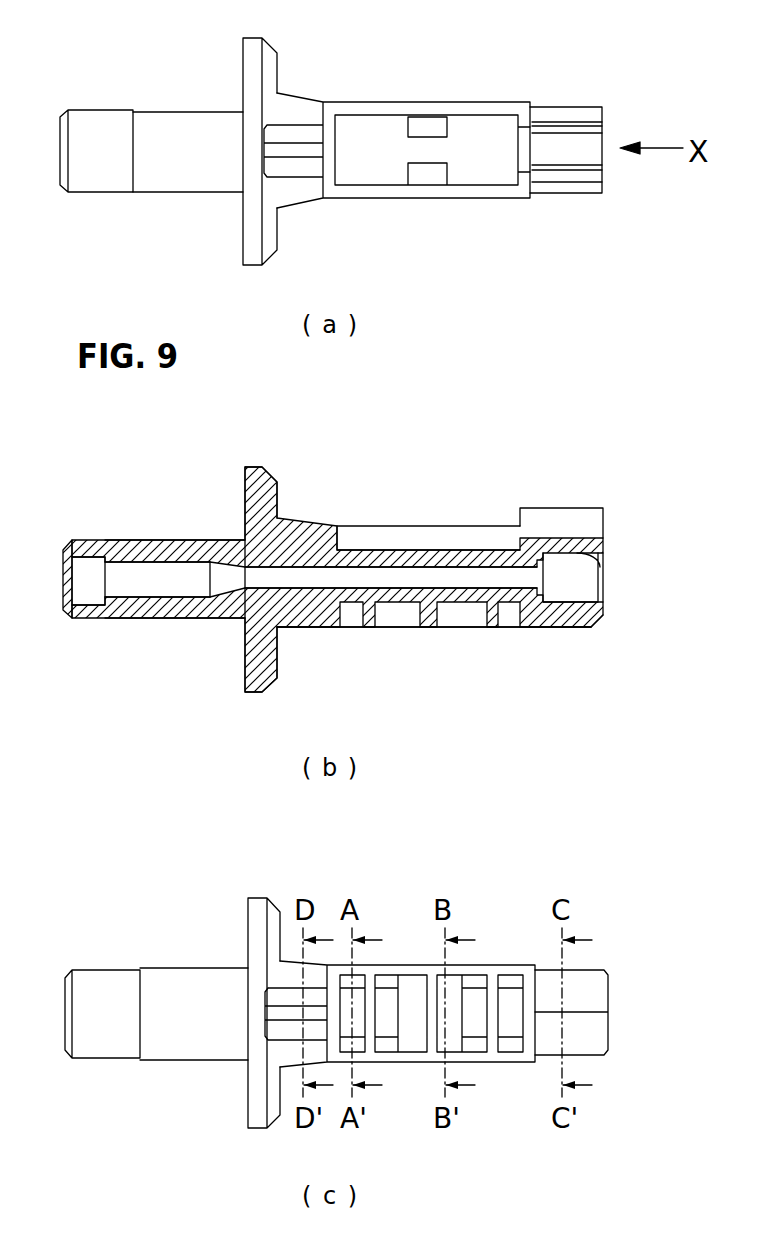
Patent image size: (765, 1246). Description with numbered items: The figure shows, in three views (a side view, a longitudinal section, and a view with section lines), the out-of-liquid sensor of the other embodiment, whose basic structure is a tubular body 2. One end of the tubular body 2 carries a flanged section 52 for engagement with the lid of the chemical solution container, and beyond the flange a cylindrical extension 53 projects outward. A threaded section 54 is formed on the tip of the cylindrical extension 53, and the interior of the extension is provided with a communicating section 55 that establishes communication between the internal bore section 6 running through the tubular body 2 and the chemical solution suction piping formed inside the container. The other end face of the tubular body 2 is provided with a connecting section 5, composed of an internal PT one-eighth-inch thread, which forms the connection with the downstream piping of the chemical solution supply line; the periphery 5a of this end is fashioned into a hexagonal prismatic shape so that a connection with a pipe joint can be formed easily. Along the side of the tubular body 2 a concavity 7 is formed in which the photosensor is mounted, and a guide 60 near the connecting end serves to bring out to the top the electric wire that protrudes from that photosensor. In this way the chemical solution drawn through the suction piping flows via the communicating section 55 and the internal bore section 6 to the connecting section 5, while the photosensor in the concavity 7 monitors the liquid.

The tubular body 2 is at (412, 96).
The connecting section 5 is at (605, 567).
The periphery 5a is at (578, 110).
The internal bore section 6 is at (314, 588).
The concavity 7 is at (478, 176).
The flanged section 52 is at (266, 49).
The cylindrical extension 53 is at (178, 120).
The threaded section 54 is at (103, 180).
The communicating section 55 is at (170, 576).
The guide 60 is at (560, 152).